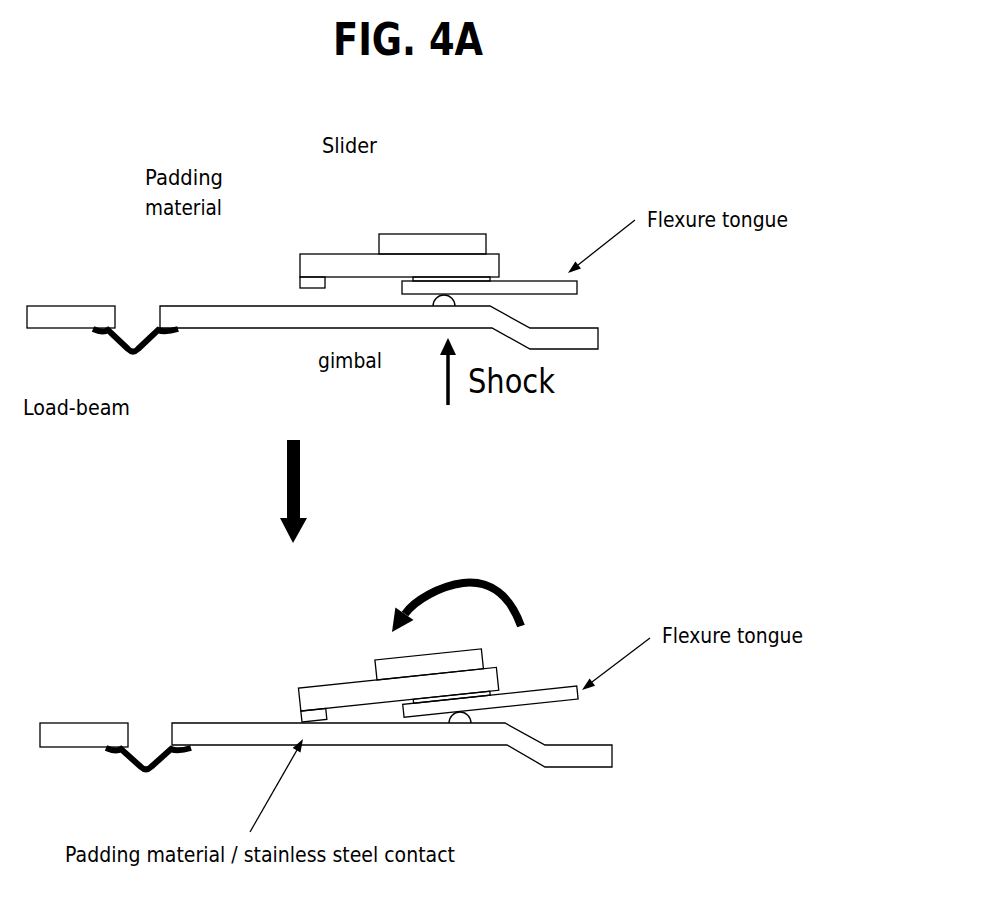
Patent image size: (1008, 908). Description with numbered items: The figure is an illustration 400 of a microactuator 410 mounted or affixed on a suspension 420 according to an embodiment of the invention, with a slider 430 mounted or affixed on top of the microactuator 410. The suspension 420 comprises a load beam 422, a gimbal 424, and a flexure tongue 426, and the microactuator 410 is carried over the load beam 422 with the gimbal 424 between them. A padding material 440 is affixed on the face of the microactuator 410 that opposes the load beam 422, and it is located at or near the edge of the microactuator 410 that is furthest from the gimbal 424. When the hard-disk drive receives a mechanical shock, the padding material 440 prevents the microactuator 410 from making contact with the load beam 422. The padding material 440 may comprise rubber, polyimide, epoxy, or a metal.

The illustration 400 is at (157, 79).
The microactuator 410 is at (490, 249).
The suspension 420 is at (607, 273).
The load beam 422 is at (231, 336).
The gimbal 424 is at (433, 297).
The flexure tongue 426 is at (538, 280).
The slider 430 is at (392, 207).
The padding material 440 is at (285, 265).